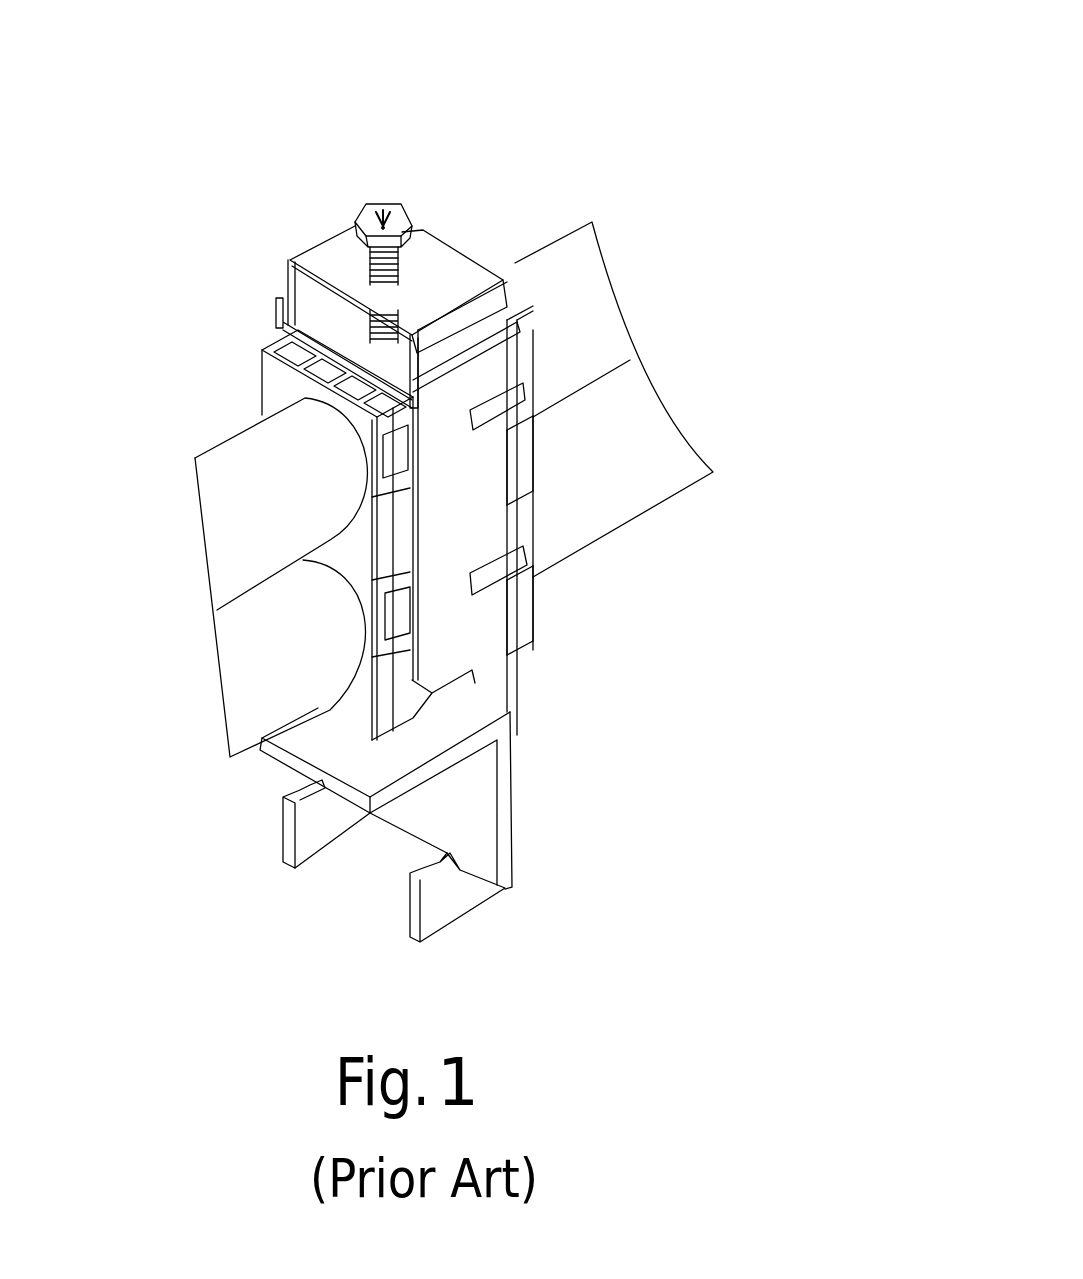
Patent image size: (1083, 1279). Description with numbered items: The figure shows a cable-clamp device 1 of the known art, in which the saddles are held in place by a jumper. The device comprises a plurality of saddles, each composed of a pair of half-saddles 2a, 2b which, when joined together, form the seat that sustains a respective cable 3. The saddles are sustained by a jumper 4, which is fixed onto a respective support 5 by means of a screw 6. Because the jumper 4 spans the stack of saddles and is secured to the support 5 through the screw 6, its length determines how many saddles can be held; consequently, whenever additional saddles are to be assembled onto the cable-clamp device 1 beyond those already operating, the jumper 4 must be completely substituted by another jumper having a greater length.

The cable-clamp device 1 is at (663, 100).
The half-saddle 2a is at (527, 357).
The half-saddle 2b is at (522, 457).
The cable 3 is at (585, 293).
The jumper 4 is at (432, 255).
The support 5 is at (503, 747).
The screw 6 is at (363, 207).